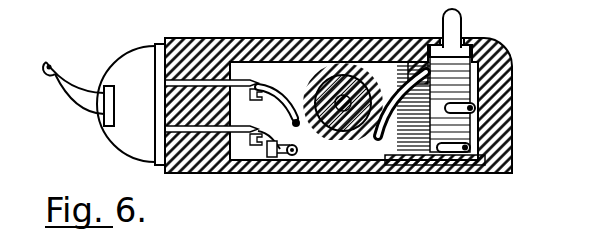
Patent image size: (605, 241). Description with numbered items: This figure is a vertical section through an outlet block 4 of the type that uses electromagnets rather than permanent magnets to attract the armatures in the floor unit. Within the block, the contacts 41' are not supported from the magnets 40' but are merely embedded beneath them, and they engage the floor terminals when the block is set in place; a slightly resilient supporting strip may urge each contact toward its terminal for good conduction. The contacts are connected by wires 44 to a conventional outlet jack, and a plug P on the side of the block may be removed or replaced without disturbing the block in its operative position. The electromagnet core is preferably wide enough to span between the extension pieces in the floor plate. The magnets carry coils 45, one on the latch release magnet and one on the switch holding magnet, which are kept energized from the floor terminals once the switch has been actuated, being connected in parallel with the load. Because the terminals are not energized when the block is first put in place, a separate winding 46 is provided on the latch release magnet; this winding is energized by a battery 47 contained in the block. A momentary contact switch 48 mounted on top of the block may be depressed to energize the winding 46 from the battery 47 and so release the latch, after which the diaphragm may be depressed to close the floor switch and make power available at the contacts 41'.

The outlet block 4 is at (256, 38).
The wires 44 is at (264, 138).
The magnet coils 45 is at (386, 156).
The battery 47 is at (328, 135).
The contacts 41' is at (433, 136).
The winding 46 is at (455, 97).
The switch 48 is at (452, 24).
The magnets 40' is at (450, 183).
The plug P is at (136, 133).